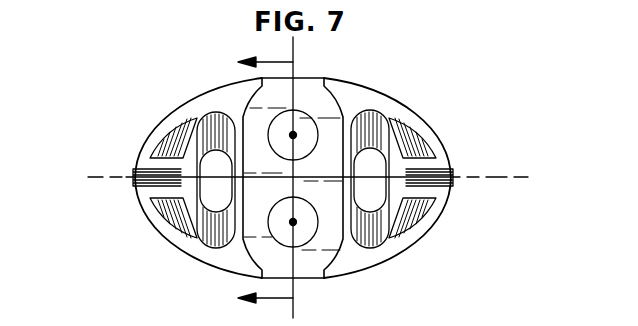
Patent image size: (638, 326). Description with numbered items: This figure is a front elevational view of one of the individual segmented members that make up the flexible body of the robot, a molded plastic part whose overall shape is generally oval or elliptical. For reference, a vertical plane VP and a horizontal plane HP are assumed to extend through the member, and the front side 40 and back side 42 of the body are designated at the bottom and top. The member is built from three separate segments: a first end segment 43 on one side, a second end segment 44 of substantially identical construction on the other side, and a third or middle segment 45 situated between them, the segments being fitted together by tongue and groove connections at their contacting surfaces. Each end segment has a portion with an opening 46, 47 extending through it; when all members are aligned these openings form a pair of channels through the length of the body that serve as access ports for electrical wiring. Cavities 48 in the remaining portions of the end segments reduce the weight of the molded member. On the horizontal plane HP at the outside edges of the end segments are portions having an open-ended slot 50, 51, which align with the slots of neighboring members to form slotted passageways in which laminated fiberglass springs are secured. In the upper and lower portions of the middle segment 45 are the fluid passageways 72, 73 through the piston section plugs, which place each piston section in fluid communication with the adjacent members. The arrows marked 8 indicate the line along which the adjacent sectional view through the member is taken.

The section line 8- 8 is at (254, 182).
The front side 40 is at (303, 279).
The back side 42 is at (322, 78).
The first end segment 43 is at (391, 99).
The second end segment 44 is at (204, 96).
The middle segment 45 is at (326, 268).
The opening 46 is at (383, 180).
The opening 47 is at (228, 181).
The cavities 48 is at (169, 143).
The open-ended slot 50 is at (134, 173).
The open-ended slot 51 is at (453, 175).
The fluid passageway 72 is at (296, 137).
The fluid passageway 73 is at (296, 220).
The vertical plane VP is at (290, 70).
The horizontal plane HP is at (118, 181).